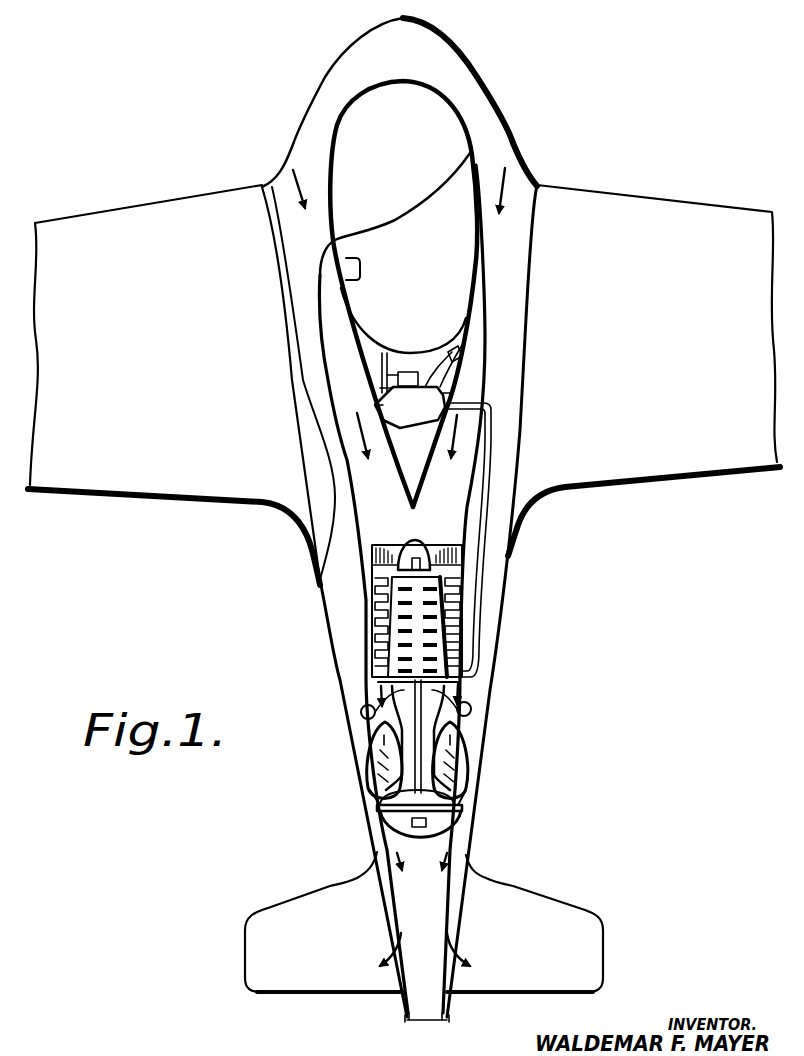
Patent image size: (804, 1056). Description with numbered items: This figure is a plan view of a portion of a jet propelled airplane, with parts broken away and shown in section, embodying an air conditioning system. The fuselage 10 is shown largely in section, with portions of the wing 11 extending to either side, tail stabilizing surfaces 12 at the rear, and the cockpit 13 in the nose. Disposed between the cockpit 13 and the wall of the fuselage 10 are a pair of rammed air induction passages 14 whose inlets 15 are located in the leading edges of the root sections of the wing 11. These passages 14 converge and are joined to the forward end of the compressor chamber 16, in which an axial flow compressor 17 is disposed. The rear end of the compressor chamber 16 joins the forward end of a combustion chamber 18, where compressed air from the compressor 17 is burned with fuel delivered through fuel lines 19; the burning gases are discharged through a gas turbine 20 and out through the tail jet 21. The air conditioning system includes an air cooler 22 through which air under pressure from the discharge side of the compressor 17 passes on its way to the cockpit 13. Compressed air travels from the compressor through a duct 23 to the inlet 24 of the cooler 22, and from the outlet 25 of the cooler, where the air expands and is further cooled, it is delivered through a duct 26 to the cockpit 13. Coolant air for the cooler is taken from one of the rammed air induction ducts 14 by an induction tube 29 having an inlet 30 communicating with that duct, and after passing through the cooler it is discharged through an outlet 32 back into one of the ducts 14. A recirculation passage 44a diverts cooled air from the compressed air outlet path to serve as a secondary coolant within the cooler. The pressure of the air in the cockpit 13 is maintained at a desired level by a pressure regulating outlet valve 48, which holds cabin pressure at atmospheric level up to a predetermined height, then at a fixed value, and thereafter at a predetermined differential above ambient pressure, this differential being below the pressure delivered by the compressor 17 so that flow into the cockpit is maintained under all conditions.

The fuselage 10 is at (501, 607).
The wing 11 is at (404, 385).
The tail stabilizing surfaces 12 is at (424, 922).
The cockpit 13 is at (458, 104).
The rammed air induction passages 14 is at (484, 340).
The inlets 15 is at (488, 177).
The compressor chamber 16 is at (372, 580).
The axial flow compressor 17 is at (403, 607).
The combustion chamber 18 is at (470, 755).
The fuel lines 19 is at (361, 708).
The gas turbine 20 is at (383, 813).
The tail jet 21 is at (423, 1010).
The air cooler 22 is at (410, 407).
The duct 23 is at (491, 449).
The inlet 24 is at (450, 393).
The outlet 25 is at (380, 390).
The duct 26 is at (403, 349).
The induction tube 29 is at (452, 375).
The inlet 30 is at (457, 360).
The outlet 32 is at (377, 405).
The recirculation passage 44a is at (407, 378).
The pressure regulating outlet valve 48 is at (362, 270).